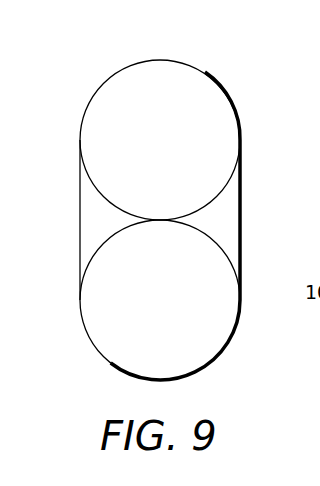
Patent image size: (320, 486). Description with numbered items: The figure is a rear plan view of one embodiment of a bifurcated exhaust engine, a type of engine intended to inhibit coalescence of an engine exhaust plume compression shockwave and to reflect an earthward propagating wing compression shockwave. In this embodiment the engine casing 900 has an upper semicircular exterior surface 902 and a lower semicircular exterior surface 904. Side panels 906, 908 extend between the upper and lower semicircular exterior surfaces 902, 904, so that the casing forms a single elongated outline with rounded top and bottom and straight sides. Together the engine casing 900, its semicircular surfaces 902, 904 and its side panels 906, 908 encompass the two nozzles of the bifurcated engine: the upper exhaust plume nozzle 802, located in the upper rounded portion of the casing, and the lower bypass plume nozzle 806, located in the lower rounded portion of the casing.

The engine casing 900 is at (162, 208).
The upper semicircular exterior surface 902 is at (205, 72).
The lower semicircular exterior surface 904 is at (110, 363).
The side panel 906 is at (80, 209).
The side panel 908 is at (240, 205).
The upper exhaust plume nozzle 802 is at (222, 126).
The lower bypass plume nozzle 806 is at (215, 334).